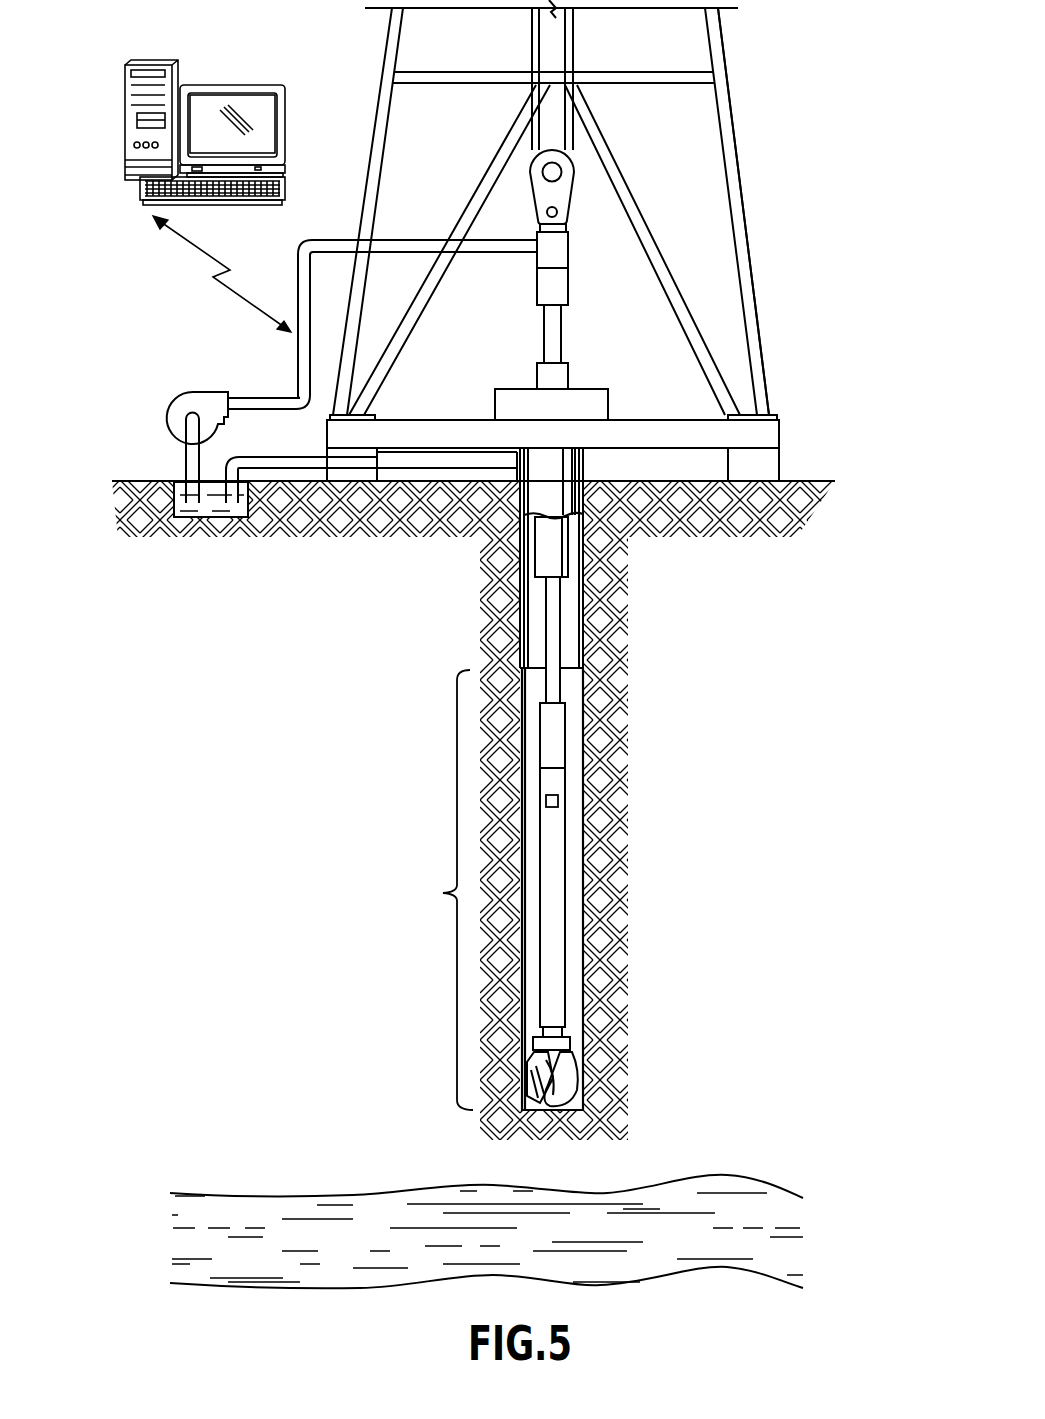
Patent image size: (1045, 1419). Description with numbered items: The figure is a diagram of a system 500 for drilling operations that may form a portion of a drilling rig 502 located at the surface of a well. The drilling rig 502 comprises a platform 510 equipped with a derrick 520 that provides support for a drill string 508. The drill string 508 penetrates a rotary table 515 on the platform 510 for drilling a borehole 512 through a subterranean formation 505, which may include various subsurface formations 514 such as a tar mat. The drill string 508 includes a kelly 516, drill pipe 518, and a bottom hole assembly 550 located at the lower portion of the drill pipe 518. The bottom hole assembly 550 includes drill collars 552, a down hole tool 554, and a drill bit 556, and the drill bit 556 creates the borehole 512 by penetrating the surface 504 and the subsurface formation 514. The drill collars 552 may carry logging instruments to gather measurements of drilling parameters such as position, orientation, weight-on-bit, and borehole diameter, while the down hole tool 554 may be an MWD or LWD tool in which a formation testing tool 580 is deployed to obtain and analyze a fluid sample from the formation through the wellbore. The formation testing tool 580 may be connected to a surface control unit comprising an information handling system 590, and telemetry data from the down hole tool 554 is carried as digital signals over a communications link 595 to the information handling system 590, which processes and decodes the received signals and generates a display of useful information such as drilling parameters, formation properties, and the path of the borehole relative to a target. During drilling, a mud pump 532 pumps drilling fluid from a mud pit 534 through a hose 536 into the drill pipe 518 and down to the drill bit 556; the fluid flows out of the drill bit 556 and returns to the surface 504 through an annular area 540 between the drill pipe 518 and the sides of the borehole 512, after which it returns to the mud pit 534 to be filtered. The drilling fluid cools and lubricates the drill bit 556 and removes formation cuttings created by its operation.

The system 500 is at (842, 58).
The drilling rig 502 is at (747, 212).
The surface 504 is at (813, 481).
The subterranean formation 505 is at (318, 772).
The drill string 508 is at (568, 893).
The platform 510 is at (779, 433).
The borehole 512 is at (584, 942).
The subsurface formation 514 is at (703, 1250).
The rotary table 515 is at (610, 402).
The kelly 516 is at (562, 338).
The drill pipe 518 is at (562, 688).
The derrick 520 is at (730, 98).
The mud pump 532 is at (207, 392).
The mud pit 534 is at (207, 512).
The hose 536 is at (298, 273).
The annular area 540 is at (575, 715).
The bottom hole assembly 550 is at (411, 890).
The drill collars 552 is at (568, 600).
The down hole tool 554 is at (558, 780).
The drill bit 556 is at (573, 1055).
The formation testing tool 580 is at (559, 797).
The information handling system 590 is at (140, 60).
The communications link 595 is at (193, 247).